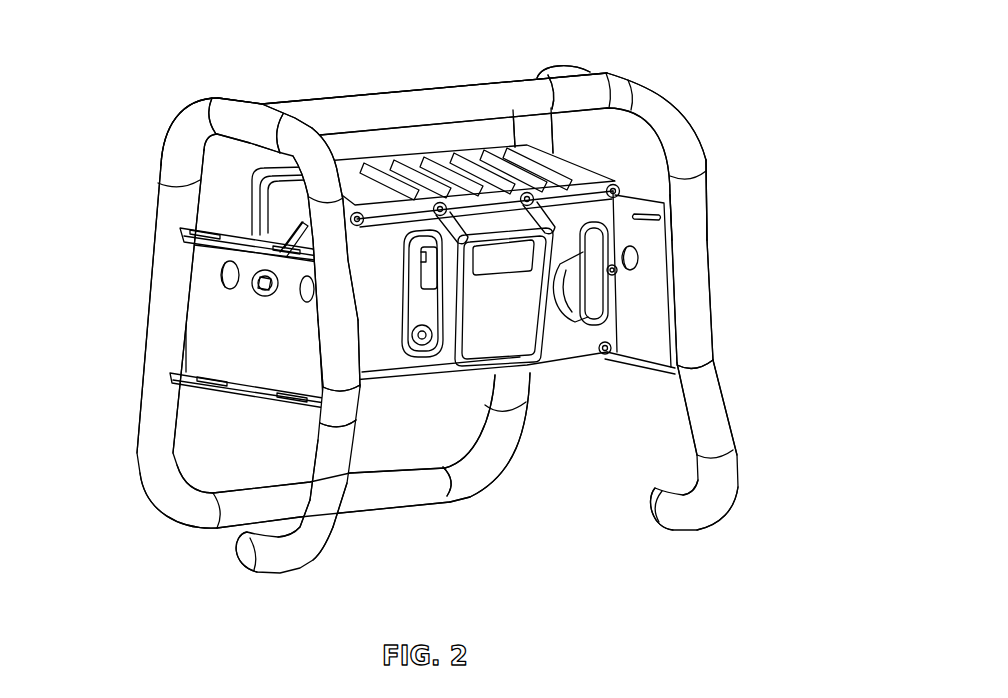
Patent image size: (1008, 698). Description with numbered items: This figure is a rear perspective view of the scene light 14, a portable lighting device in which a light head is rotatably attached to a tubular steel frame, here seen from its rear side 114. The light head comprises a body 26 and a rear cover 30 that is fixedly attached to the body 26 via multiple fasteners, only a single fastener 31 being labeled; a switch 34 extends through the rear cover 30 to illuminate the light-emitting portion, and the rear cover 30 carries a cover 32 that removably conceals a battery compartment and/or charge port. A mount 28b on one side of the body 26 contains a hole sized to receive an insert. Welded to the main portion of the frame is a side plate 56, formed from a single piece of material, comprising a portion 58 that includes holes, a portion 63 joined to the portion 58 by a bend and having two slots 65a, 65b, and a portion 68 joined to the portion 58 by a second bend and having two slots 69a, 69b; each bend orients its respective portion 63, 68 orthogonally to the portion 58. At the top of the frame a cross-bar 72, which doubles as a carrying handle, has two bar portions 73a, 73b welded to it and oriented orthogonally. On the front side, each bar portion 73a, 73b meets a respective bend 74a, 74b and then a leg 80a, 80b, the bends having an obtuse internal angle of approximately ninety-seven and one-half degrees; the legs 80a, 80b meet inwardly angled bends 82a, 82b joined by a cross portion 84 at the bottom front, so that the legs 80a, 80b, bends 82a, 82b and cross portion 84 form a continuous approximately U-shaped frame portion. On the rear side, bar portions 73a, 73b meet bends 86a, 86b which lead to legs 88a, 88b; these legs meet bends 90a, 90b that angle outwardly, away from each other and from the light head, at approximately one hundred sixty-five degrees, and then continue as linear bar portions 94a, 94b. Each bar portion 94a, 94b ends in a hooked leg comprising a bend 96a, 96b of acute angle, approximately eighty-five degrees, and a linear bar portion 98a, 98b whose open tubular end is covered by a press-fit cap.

The scene light 14 is at (106, 46).
The rear side 114 is at (745, 160).
The body 26 is at (545, 162).
The mount 28b is at (283, 232).
The rear cover 30 is at (645, 252).
The fastener 31 is at (662, 213).
The cover 32 is at (423, 308).
The switch 34 is at (600, 355).
The side plate 56 is at (195, 350).
The portion 58 is at (215, 300).
The portion 63 is at (200, 250).
The slot 65a is at (252, 267).
The slot 65b is at (210, 231).
The portion 68 is at (245, 393).
The slot 69a is at (290, 407).
The slot 69b is at (214, 397).
The cross-bar 72 is at (428, 105).
The bar portion 73a is at (623, 85).
The bar portion 73b is at (240, 112).
The bend 74a is at (553, 68).
The bend 74b is at (192, 118).
The leg 80a is at (514, 389).
The leg 80b is at (160, 340).
The bend 82a is at (490, 465).
The bend 82b is at (165, 485).
The cross portion 84 is at (398, 500).
The bend 86a is at (676, 115).
The bend 86b is at (306, 135).
The leg 88a is at (695, 302).
The leg 88b is at (320, 337).
The bend 90a is at (700, 375).
The bend 90b is at (352, 408).
The bar portion 94a is at (717, 432).
The bar portion 94b is at (353, 442).
The bend 96a is at (718, 500).
The bend 96b is at (313, 553).
The bar portion 98a is at (685, 517).
The bar portion 98b is at (247, 560).